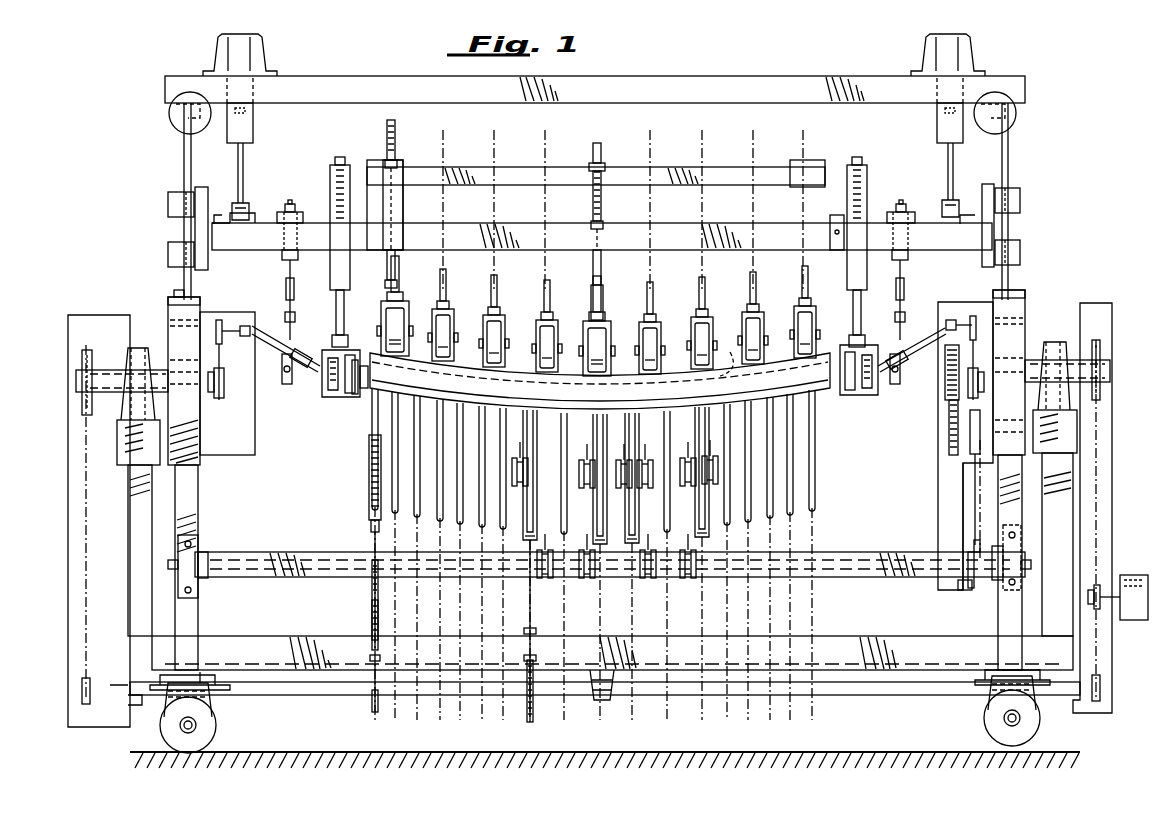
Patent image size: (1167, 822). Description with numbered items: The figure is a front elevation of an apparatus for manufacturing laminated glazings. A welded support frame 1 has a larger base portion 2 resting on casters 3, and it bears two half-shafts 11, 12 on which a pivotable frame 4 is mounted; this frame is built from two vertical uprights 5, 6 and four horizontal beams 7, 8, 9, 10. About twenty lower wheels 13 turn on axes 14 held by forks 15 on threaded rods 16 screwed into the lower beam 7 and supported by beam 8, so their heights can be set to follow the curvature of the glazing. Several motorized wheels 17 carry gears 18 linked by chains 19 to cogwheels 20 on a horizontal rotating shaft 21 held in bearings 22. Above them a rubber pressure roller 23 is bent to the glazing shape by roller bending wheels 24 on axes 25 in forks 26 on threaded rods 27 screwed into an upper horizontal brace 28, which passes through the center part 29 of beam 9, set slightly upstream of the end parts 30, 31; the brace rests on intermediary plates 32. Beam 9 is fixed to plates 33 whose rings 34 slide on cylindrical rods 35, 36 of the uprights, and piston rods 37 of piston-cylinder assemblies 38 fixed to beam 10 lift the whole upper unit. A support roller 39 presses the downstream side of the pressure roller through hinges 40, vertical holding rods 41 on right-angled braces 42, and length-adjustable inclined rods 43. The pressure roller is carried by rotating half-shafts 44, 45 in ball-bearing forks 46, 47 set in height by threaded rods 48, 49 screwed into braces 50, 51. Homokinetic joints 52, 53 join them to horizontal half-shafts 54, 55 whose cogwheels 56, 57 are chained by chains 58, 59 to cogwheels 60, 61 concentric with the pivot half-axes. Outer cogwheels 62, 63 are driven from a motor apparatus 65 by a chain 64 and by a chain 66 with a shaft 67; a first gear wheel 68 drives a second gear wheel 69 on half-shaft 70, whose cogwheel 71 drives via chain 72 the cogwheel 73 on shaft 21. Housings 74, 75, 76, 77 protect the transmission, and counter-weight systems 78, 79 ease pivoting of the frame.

The support frame 1 is at (118, 461).
The base portion 2 is at (126, 581).
The casters 3 is at (218, 731).
The pivotable frame 4 is at (212, 492).
The vertical upright 5 is at (1024, 307).
The vertical upright 6 is at (167, 309).
The lower beam 7 is at (832, 641).
The horizontal beam 8 is at (860, 551).
The horizontal beam 9 is at (717, 226).
The upper horizontal beam 10 is at (788, 75).
The half-shaft 11 is at (1062, 359).
The half-shaft 12 is at (110, 368).
The lower wheels 13 is at (372, 444).
The axes 14 is at (366, 475).
The forks 15 is at (368, 515).
The threaded rods 16 is at (370, 619).
The motorized lower wheels 17 is at (590, 439).
The gears 18 is at (646, 466).
The chains 19 is at (582, 579).
The cogwheels 20 is at (588, 587).
The horizontal rotating shaft 21 is at (840, 553).
The bearings 22 is at (198, 593).
The pressure roller 23 is at (600, 381).
The roller bending wheels 24 is at (408, 328).
The axes 25 is at (456, 330).
The forks 26 is at (508, 334).
The threaded rods 27 is at (394, 147).
The upper horizontal brace 28 is at (688, 166).
The center part 29 is at (535, 228).
The end part 30 is at (968, 222).
The end part 31 is at (222, 222).
The intermediary plates 32 is at (405, 209).
The plate 33 is at (194, 229).
The rings 34 is at (166, 199).
The cylindrical rod 35 is at (182, 161).
The cylindrical rod 36 is at (1010, 155).
The piston rods 37 is at (245, 161).
The piston-cylinder assemblies 38 is at (255, 125).
The support roller 39 is at (712, 378).
The hinge 40 is at (306, 353).
The vertical holding rod 41 is at (291, 202).
The right-angled brace 42 is at (278, 213).
The inclined rod 43 is at (296, 293).
The rotating half-shaft 44 is at (852, 399).
The rotating half-shaft 45 is at (352, 397).
The fork 46 is at (874, 405).
The fork 47 is at (323, 403).
The threaded rod 48 is at (848, 283).
The threaded rod 49 is at (350, 291).
The right-angled brace 50 is at (870, 182).
The right-angled brace 51 is at (346, 185).
The homokinetic joint 52 is at (892, 353).
The homokinetic joint 53 is at (296, 383).
The horizontal half-shaft 54 is at (948, 318).
The horizontal half-shaft 55 is at (248, 325).
The cogwheel 56 is at (974, 315).
The cogwheel 57 is at (220, 318).
The chain 58 is at (975, 349).
The chain 59 is at (221, 357).
The cogwheel 60 is at (980, 389).
The cogwheel 61 is at (220, 401).
The cogwheel 62 is at (1102, 346).
The cogwheel 63 is at (78, 341).
The chain 64 is at (1100, 493).
The motor apparatus 65 is at (1136, 623).
The chain 66 is at (84, 537).
The shaft 67 is at (318, 695).
The first gear wheel 68 is at (944, 387).
The second gear wheel 69 is at (947, 441).
The half-shaft 70 is at (972, 471).
The cogwheel 71 is at (976, 489).
The chain 72 is at (976, 519).
The cogwheel 73 is at (968, 581).
The housing 74 is at (1100, 305).
The housing 75 is at (940, 469).
The housing 76 is at (242, 471).
The housing 77 is at (90, 347).
The counter-weight system 78 is at (1017, 112).
The counter-weight system 79 is at (169, 118).